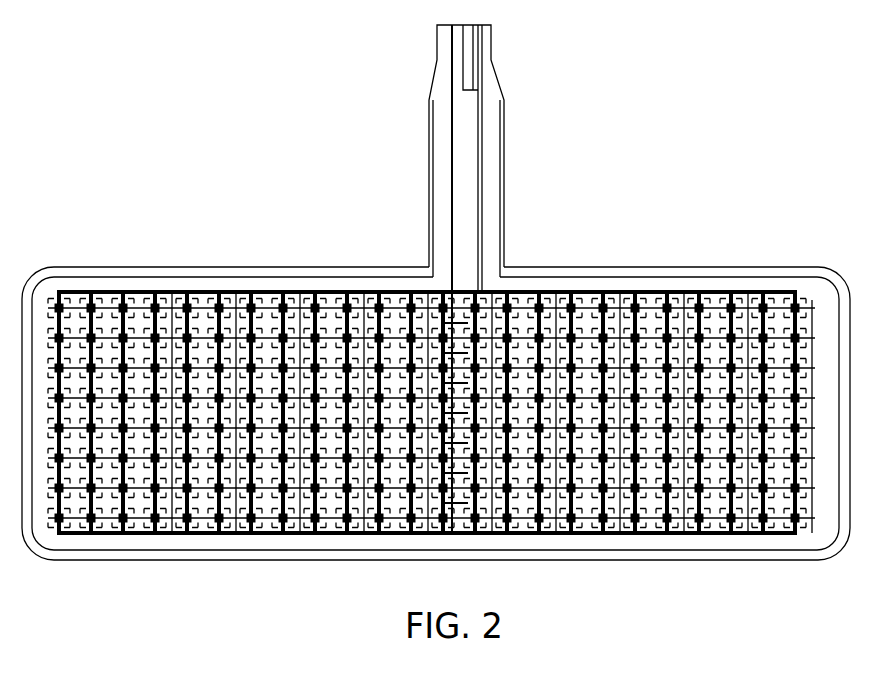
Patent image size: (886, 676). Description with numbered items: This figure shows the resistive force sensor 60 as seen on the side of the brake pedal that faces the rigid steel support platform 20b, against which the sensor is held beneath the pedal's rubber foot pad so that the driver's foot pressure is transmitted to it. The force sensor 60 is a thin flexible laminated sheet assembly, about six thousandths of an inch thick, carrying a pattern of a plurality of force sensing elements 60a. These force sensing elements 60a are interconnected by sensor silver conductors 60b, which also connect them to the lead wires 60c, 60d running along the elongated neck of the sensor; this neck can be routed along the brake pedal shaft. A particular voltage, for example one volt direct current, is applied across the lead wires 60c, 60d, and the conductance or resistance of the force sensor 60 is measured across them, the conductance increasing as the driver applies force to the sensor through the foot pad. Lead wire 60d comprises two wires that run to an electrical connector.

The rigid steel support platform 20b is at (105, 267).
The resistive force sensor 60 is at (412, 319).
The force sensing elements 60a is at (660, 340).
The sensor silver conductors 60b is at (377, 316).
The lead wire 60c is at (452, 180).
The lead wire 60d is at (483, 180).